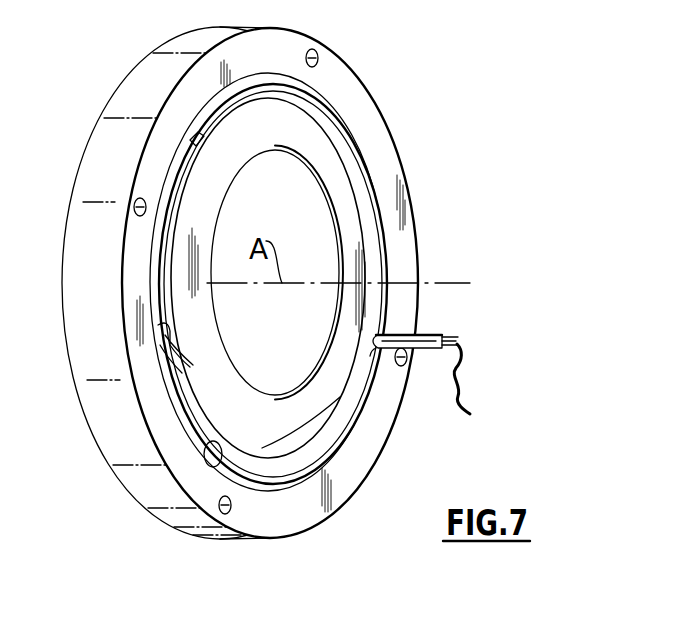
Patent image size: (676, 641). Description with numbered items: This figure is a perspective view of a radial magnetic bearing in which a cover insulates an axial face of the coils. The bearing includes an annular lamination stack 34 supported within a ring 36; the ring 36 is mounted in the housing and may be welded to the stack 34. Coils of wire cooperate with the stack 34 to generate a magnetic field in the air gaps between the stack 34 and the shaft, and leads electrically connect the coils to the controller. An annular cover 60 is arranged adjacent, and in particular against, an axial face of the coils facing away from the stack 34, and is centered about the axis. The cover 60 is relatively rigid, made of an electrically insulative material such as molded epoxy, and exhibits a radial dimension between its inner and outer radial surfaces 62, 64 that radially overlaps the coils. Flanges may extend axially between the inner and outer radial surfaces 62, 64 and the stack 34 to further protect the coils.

The lamination stack 34 is at (263, 465).
The ring 36 is at (262, 517).
The annular cover 60 is at (303, 125).
The inner radial surface 62 is at (313, 163).
The outer radial surface 64 is at (367, 167).